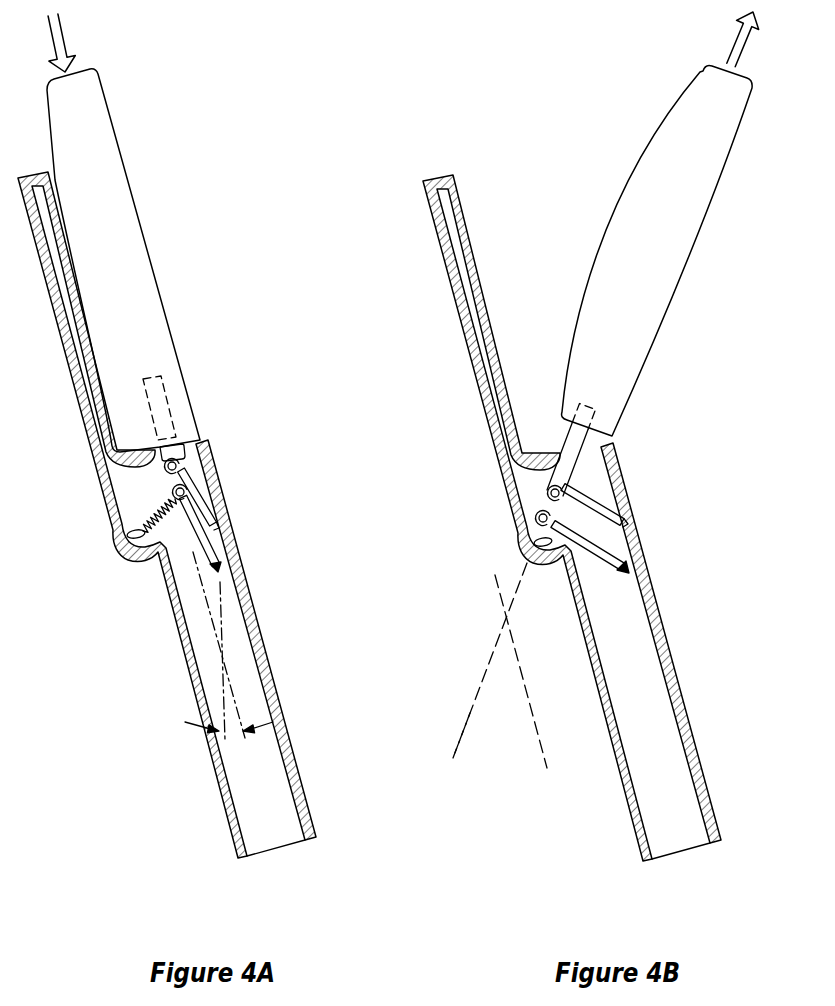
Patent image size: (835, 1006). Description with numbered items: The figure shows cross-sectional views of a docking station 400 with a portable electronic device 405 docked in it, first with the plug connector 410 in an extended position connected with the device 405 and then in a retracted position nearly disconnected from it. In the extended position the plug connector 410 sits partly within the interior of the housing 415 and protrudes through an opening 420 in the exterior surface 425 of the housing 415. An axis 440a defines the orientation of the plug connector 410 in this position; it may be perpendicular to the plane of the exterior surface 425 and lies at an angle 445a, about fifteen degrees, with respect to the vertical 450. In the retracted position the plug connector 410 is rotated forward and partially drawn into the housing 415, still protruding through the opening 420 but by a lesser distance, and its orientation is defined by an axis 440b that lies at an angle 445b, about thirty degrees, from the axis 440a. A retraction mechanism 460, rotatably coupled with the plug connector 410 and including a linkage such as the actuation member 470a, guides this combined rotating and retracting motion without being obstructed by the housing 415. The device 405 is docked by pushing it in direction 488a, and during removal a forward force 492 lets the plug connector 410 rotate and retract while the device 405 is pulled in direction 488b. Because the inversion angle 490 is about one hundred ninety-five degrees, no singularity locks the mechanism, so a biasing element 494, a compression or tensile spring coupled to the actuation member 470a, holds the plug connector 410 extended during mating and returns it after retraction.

In FIG. 4A, the docking station 400 is at (183, 822).
In FIG. 4B, the docking station 400 is at (605, 808).
In FIG. 4A, the portable electronic device 405 is at (146, 228).
In FIG. 4B, the portable electronic device 405 is at (704, 240).
In FIG. 4A, the plug connector 410 is at (162, 402).
In FIG. 4B, the plug connector 410 is at (577, 436).
In FIG. 4A, the housing 415 is at (262, 626).
In FIG. 4B, the housing 415 is at (673, 677).
In FIG. 4A, the opening 420 is at (149, 469).
In FIG. 4B, the opening 420 is at (598, 460).
In FIG. 4A, the exterior surface 425 is at (190, 448).
In FIG. 4A, the axis 440a is at (234, 688).
In FIG. 4B, the axis 440a is at (558, 692).
In FIG. 4B, the axis 440b is at (463, 730).
In FIG. 4A, the angle 445a is at (233, 733).
In FIG. 4B, the angle 445b is at (470, 686).
In FIG. 4A, the vertical 450 is at (223, 690).
In FIG. 4A, the retraction mechanism 460 is at (182, 543).
In FIG. 4B, the retraction mechanism 460 is at (606, 487).
In FIG. 4A, the actuation member 470a is at (216, 548).
In FIG. 4B, the actuation member 470a is at (605, 557).
In FIG. 4A, the direction 488a is at (62, 41).
In FIG. 4B, the direction 488b is at (733, 47).
In FIG. 4A, the inversion angle 490 is at (153, 492).
In FIG. 4B, the force 492 is at (590, 164).
In FIG. 4A, the biasing element 494 is at (128, 530).
In FIG. 4B, the biasing element 494 is at (527, 530).